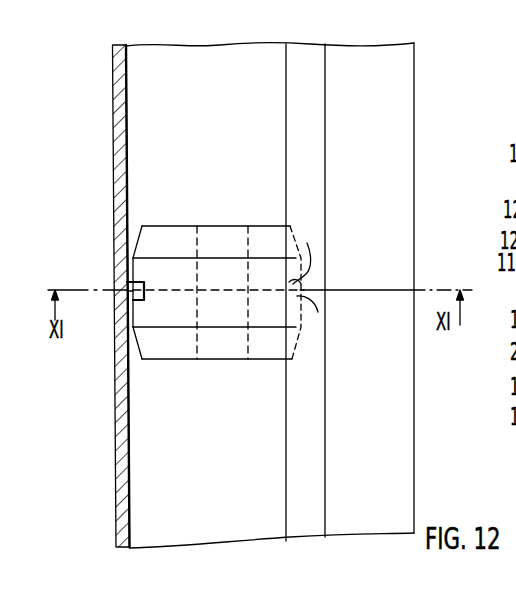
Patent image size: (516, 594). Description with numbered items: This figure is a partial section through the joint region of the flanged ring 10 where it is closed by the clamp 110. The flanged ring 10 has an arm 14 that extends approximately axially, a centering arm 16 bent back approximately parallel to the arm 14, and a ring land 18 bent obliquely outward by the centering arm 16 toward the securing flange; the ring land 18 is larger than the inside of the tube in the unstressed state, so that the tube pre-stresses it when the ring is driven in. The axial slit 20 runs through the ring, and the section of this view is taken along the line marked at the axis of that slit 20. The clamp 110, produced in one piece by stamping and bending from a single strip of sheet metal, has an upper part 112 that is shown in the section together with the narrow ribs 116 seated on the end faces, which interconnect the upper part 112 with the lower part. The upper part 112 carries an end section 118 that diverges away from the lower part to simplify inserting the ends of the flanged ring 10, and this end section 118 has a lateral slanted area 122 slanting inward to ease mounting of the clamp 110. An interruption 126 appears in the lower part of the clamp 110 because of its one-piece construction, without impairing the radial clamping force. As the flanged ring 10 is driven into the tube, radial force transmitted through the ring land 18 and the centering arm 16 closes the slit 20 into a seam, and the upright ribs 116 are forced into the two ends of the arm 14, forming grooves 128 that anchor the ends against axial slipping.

The flanged ring 10 is at (114, 432).
The arm 14 is at (200, 79).
The centering arm 16 is at (367, 76).
The ring land 18 is at (302, 78).
The axial slit 20 is at (386, 290).
The clamp 110 is at (126, 332).
The upper part 112 is at (219, 237).
The ribs 116 is at (133, 291).
The end section 118 is at (183, 237).
The lateral slanted area 122 is at (136, 228).
The interruption 126 is at (246, 344).
The grooves 128 is at (128, 281).